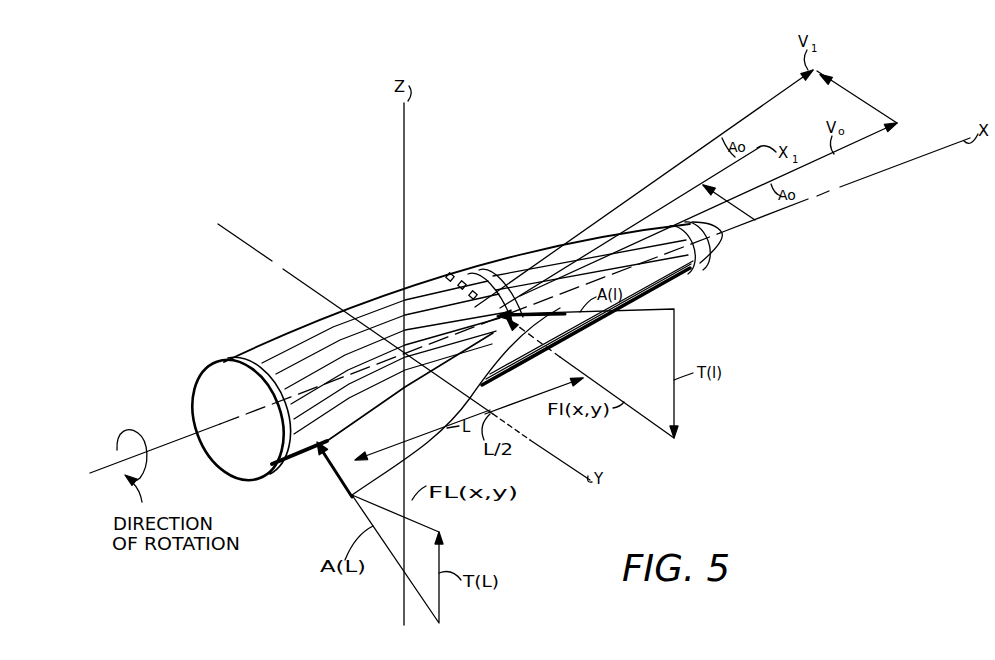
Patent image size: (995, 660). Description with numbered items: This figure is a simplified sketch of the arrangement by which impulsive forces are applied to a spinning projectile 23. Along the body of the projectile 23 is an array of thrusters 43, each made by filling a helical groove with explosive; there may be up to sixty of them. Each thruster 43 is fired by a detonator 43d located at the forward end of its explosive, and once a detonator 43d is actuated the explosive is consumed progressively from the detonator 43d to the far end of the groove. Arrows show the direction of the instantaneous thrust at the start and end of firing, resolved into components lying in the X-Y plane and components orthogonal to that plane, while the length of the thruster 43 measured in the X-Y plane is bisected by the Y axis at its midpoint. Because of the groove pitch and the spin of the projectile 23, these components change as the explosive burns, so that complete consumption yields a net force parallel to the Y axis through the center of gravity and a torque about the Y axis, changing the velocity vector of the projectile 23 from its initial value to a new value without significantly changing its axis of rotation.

The projectile 23 is at (687, 272).
The thruster 43 is at (316, 368).
The detonator 43d is at (473, 294).